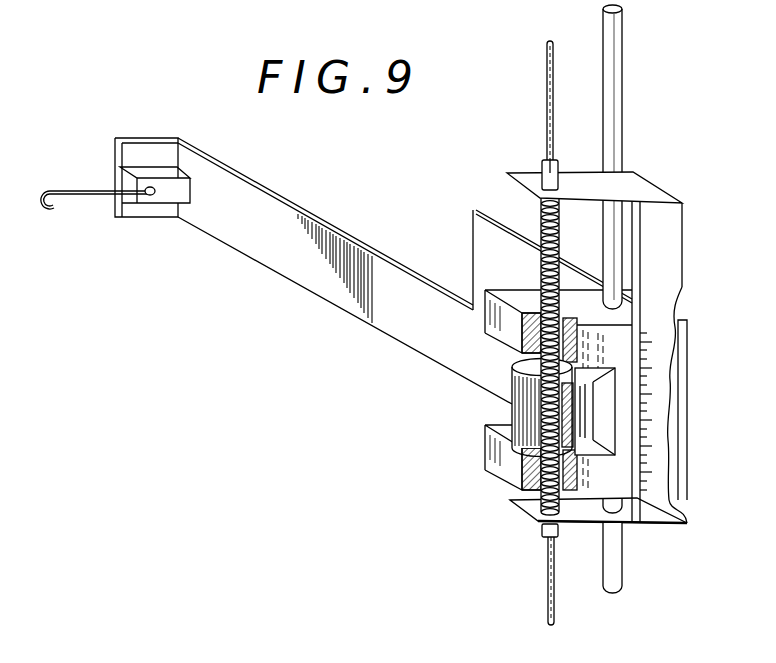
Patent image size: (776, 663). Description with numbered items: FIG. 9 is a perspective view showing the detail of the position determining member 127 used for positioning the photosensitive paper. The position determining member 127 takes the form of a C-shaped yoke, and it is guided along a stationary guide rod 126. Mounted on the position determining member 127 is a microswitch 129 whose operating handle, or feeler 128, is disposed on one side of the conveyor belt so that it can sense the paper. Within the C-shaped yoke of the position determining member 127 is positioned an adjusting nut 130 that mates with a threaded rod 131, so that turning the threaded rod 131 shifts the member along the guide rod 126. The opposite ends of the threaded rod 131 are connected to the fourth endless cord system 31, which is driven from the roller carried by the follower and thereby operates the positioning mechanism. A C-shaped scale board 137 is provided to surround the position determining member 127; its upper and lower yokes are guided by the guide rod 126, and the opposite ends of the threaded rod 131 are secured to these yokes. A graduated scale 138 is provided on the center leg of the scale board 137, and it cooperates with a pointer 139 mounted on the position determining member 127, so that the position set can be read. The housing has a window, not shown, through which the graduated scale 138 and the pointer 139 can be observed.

The fourth endless cord system 31 is at (547, 82).
The stationary guide rod 126 is at (612, 124).
The position determining member 127 is at (680, 365).
The feeler 128 is at (62, 191).
The microswitch 129 is at (151, 188).
The adjusting nut 130 is at (512, 416).
The threaded rod 131 is at (540, 221).
The C-shaped scale board 137 is at (672, 250).
The graduated scale 138 is at (652, 416).
The pointer 139 is at (619, 411).